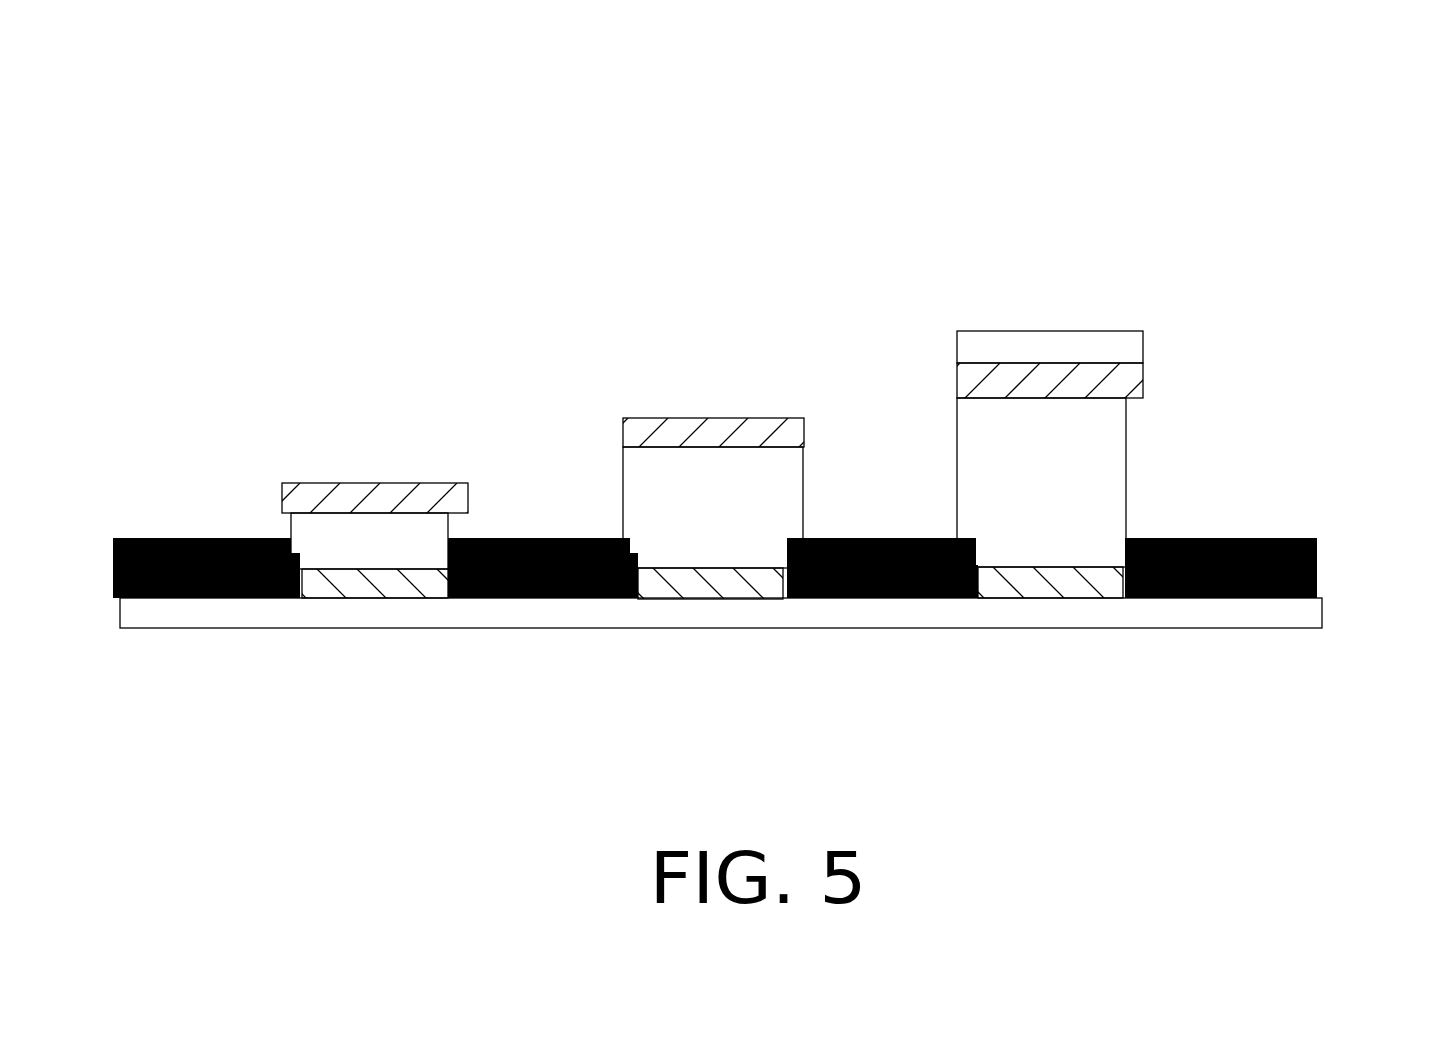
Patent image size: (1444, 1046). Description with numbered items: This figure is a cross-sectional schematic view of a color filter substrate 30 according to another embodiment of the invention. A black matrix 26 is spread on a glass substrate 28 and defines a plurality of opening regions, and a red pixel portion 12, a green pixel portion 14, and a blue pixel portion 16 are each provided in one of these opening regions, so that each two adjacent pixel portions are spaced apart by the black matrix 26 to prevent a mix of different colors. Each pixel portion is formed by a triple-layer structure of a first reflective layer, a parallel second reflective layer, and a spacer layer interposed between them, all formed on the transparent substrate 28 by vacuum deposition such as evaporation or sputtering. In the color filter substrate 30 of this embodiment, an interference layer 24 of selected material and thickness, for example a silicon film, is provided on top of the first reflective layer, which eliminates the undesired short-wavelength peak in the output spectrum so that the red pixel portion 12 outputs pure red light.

The red pixel portion 12 is at (1002, 419).
The green pixel portion 14 is at (665, 457).
The blue pixel portion 16 is at (324, 490).
The interference layer 24 is at (1125, 342).
The black matrix 26 is at (1218, 540).
The glass substrate 28 is at (1280, 613).
The color filter substrate 30 is at (1360, 52).